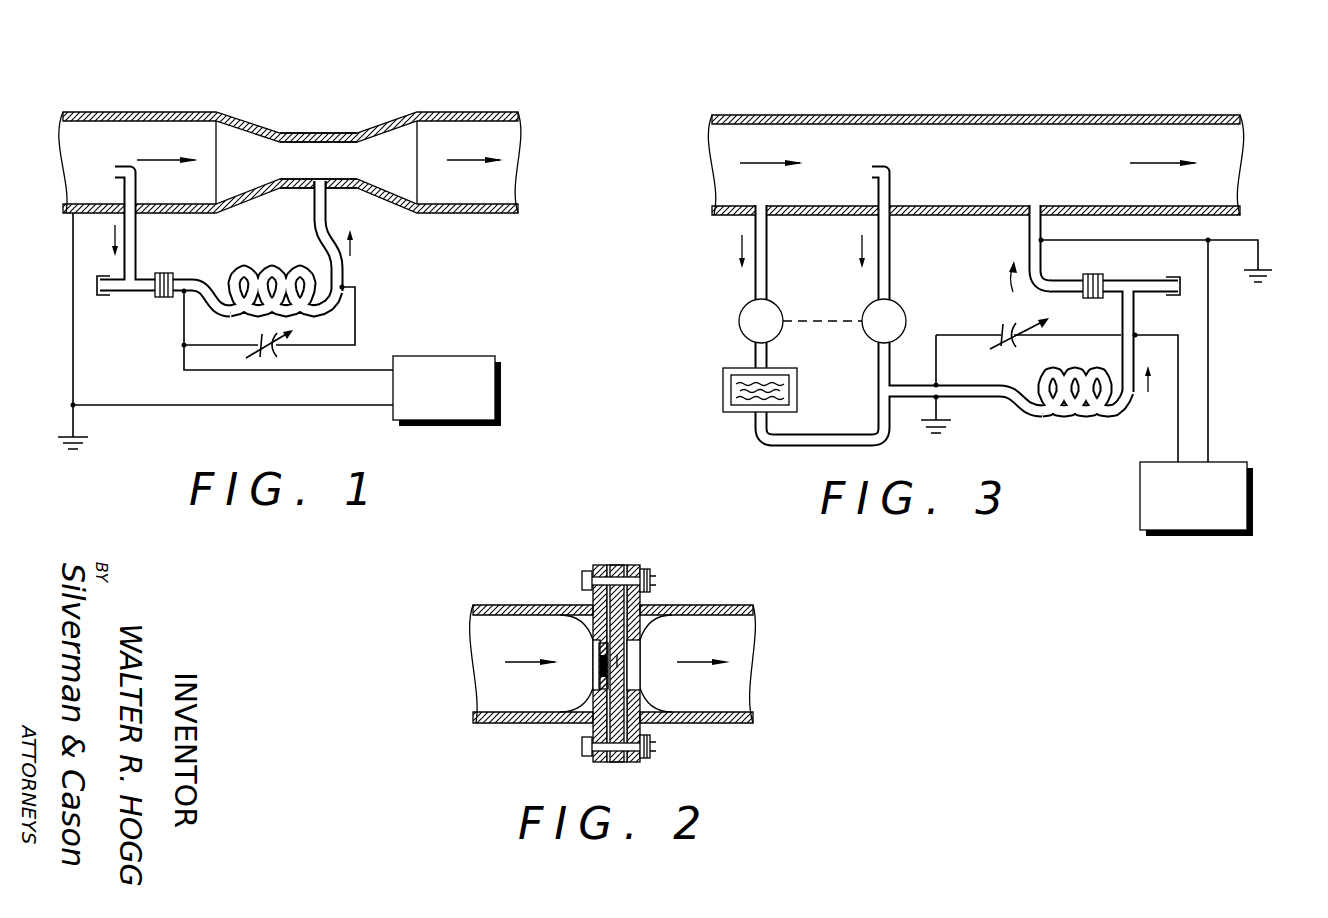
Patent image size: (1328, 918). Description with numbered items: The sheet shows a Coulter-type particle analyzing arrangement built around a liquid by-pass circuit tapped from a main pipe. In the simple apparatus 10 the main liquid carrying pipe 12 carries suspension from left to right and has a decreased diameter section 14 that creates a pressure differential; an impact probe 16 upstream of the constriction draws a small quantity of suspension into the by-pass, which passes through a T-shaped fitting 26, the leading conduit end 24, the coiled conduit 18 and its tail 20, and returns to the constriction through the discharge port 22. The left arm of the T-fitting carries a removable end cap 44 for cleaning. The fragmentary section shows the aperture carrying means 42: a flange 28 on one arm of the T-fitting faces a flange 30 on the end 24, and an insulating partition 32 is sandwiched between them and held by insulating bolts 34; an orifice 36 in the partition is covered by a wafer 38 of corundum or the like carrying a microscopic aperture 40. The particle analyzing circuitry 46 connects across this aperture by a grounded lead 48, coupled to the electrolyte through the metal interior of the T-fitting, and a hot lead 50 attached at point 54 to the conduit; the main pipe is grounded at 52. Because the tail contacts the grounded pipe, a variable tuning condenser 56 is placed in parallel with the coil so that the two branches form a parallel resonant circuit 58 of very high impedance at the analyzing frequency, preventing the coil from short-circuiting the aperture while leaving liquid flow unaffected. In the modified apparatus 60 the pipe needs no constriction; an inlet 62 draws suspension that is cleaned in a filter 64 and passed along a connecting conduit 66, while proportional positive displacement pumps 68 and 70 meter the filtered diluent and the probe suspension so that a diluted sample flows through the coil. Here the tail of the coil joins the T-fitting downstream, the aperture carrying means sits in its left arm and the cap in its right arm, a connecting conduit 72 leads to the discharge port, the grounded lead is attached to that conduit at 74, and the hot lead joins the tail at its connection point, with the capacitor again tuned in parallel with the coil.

In FIG. 1, the apparatus 10 is at (405, 270).
In FIG. 1, the main liquid carrying pipe 12 is at (166, 112).
In FIG. 3, the main liquid carrying pipe 12 is at (978, 115).
In FIG. 2, the main liquid carrying pipe 12 is at (613, 664).
In FIG. 1, the decreased diameter section 14 is at (334, 133).
In FIG. 1, the impact probe 16 is at (137, 233).
In FIG. 3, the impact probe 16 is at (892, 178).
In FIG. 1, the coiled conduit 18 is at (284, 264).
In FIG. 3, the coiled conduit 18 is at (1100, 420).
In FIG. 1, the tail 20 is at (343, 230).
In FIG. 3, the tail 20 is at (1136, 312).
In FIG. 1, the discharge port 22 is at (321, 180).
In FIG. 3, the discharge port 22 is at (1040, 206).
In FIG. 1, the leading conduit end 24 is at (200, 283).
In FIG. 3, the leading conduit end 24 is at (912, 385).
In FIG. 1, the T-shaped fitting 26 is at (134, 292).
In FIG. 3, the T-shaped fitting 26 is at (1140, 280).
In FIG. 2, the flange 28 is at (600, 565).
In FIG. 2, the flange 30 is at (634, 565).
In FIG. 2, the partition 32 is at (618, 565).
In FIG. 2, the bolts 34 is at (597, 577).
In FIG. 2, the orifice 36 is at (618, 661).
In FIG. 2, the wafer 38 is at (600, 660).
In FIG. 2, the aperture 40 is at (612, 666).
In FIG. 1, the aperture carrying means 42 is at (157, 312).
In FIG. 3, the aperture carrying means 42 is at (1095, 272).
In FIG. 2, the aperture carrying means 42 is at (560, 742).
In FIG. 1, the removable end cap 44 is at (96, 288).
In FIG. 3, the removable end cap 44 is at (1186, 290).
In FIG. 1, the particle analyzing circuitry 46 is at (502, 397).
In FIG. 3, the particle analyzing circuitry 46 is at (1254, 487).
In FIG. 1, the lead 48 is at (268, 408).
In FIG. 3, the lead 48 is at (1210, 425).
In FIG. 1, the lead 50 is at (366, 372).
In FIG. 3, the lead 50 is at (1172, 437).
In FIG. 1, the ground 52 is at (73, 214).
In FIG. 1, the connection point 54 is at (205, 317).
In FIG. 3, the connection point 54 is at (1170, 367).
In FIG. 1, the variable tuning condenser 56 is at (286, 336).
In FIG. 3, the variable tuning condenser 56 is at (1002, 340).
In FIG. 1, the parallel resonant circuit 58 is at (352, 315).
In FIG. 3, the parallel resonant circuit 58 is at (1004, 374).
In FIG. 3, the apparatus 60 is at (942, 440).
In FIG. 3, the inlet 62 is at (756, 212).
In FIG. 3, the filter 64 is at (723, 390).
In FIG. 3, the connecting conduit 66 is at (800, 448).
In FIG. 3, the proportional positive displacement pump 68 is at (738, 320).
In FIG. 3, the proportional positive displacement pump 70 is at (864, 308).
In FIG. 3, the connecting conduit 72 is at (1022, 296).
In FIG. 3, the connection point 74 is at (1046, 240).